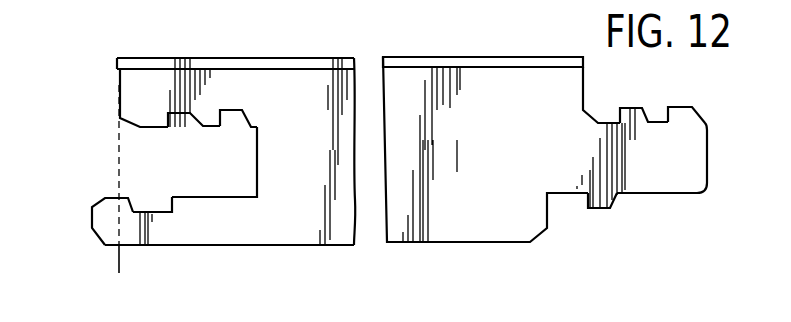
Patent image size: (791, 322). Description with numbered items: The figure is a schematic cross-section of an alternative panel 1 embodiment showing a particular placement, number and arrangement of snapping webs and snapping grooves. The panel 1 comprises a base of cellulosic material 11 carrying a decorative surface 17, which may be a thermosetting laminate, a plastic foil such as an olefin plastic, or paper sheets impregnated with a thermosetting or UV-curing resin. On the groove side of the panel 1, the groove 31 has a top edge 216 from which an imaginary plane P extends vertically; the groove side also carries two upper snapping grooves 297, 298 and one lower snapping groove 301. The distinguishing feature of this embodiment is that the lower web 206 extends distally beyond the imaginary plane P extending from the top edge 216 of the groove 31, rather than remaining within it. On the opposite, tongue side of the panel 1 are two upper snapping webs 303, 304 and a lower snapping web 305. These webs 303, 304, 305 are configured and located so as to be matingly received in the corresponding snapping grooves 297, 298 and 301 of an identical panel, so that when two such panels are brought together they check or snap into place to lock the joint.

The panel 1 is at (301, 51).
The decorative surface 17 is at (478, 57).
The cellulosic material 11 is at (552, 101).
The top edge of groove 216 is at (124, 100).
The upper snapping groove 297 is at (185, 115).
The upper snapping groove 298 is at (233, 112).
The groove 31 is at (258, 156).
The lower snapping groove 301 is at (153, 212).
The lower web 206 is at (94, 219).
The upper snapping web 303 is at (633, 107).
The upper snapping web 304 is at (684, 106).
The lower snapping web 305 is at (607, 210).
The imaginary vertical plane P is at (109, 179).